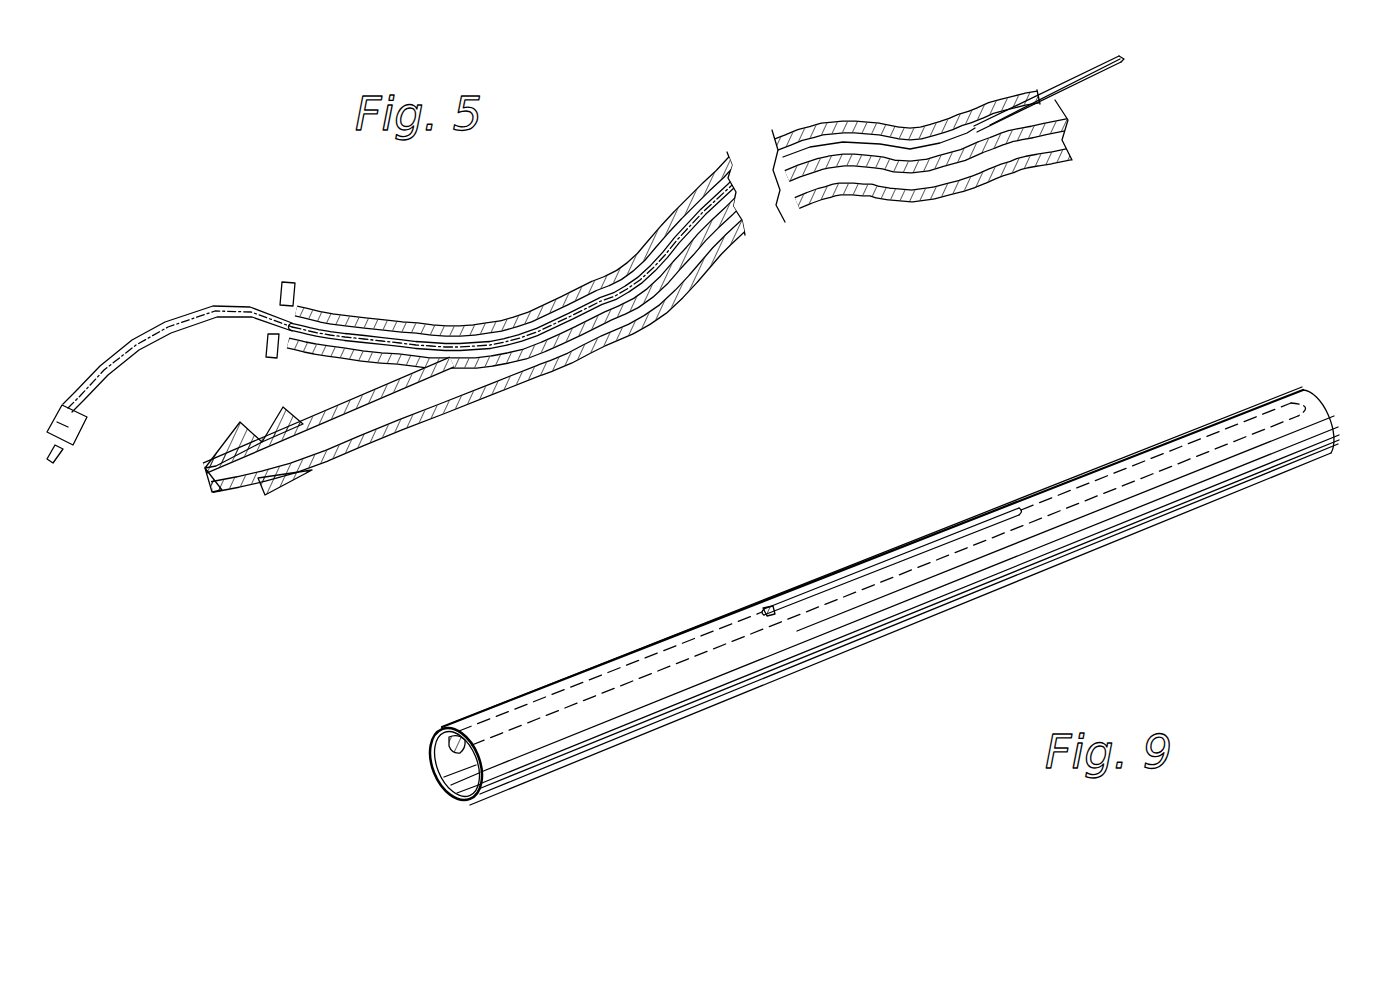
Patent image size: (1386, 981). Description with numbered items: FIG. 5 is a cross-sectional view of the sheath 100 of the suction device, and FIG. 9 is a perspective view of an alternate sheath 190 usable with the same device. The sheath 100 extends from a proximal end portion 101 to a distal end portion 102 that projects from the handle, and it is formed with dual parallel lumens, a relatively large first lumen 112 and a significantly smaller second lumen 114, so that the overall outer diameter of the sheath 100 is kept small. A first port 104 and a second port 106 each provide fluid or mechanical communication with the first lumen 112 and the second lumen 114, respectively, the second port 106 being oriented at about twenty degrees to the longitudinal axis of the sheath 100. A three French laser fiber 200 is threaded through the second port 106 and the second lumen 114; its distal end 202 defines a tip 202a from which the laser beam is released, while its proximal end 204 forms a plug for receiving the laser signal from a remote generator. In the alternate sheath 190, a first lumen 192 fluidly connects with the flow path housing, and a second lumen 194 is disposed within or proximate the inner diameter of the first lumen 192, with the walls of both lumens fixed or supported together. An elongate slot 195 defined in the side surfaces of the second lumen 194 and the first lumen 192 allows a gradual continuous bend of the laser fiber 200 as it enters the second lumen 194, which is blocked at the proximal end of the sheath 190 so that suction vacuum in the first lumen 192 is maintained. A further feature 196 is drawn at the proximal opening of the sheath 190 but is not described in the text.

In FIG. 5, the sheath 100 is at (512, 246).
In FIG. 5, the proximal end portion 101 is at (413, 427).
In FIG. 5, the distal end portion 102 is at (1037, 88).
In FIG. 5, the first port 104 is at (218, 470).
In FIG. 5, the second port 106 is at (273, 332).
In FIG. 5, the first lumen 112 is at (522, 372).
In FIG. 5, the second lumen 114 is at (438, 336).
In FIG. 5, the laser fiber 200 is at (188, 310).
In FIG. 5, the distal end 202 is at (1080, 76).
In FIG. 5, the tip 202a is at (1123, 63).
In FIG. 5, the proximal end 204 is at (87, 432).
In FIG. 9, the alternate sheath 190 is at (497, 787).
In FIG. 9, the first lumen 192 is at (445, 763).
In FIG. 9, the second lumen 194 is at (871, 575).
In FIG. 9, the elongate slot 195 is at (767, 610).
In FIG. 9, the internal rib 196 is at (433, 741).